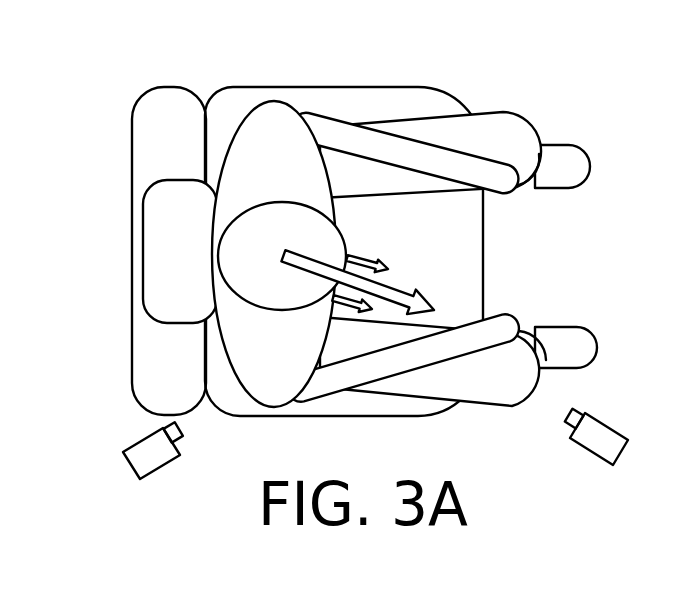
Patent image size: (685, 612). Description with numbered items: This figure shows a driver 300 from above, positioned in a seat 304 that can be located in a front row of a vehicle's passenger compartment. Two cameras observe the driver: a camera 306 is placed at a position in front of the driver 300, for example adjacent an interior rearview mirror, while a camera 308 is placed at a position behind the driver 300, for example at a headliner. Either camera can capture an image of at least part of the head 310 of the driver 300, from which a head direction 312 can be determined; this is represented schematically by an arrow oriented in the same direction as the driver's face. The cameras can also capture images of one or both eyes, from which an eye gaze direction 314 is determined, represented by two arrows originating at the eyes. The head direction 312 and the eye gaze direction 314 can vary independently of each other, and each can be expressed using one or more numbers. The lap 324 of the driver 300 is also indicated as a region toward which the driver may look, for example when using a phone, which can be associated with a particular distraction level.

The driver 300 is at (270, 101).
The seat 304 is at (416, 88).
The camera 306 is at (582, 450).
The camera 308 is at (133, 446).
The head 310 is at (267, 203).
The head direction 312 is at (387, 303).
The eye gaze direction 314 is at (362, 253).
The lap 324 is at (470, 265).